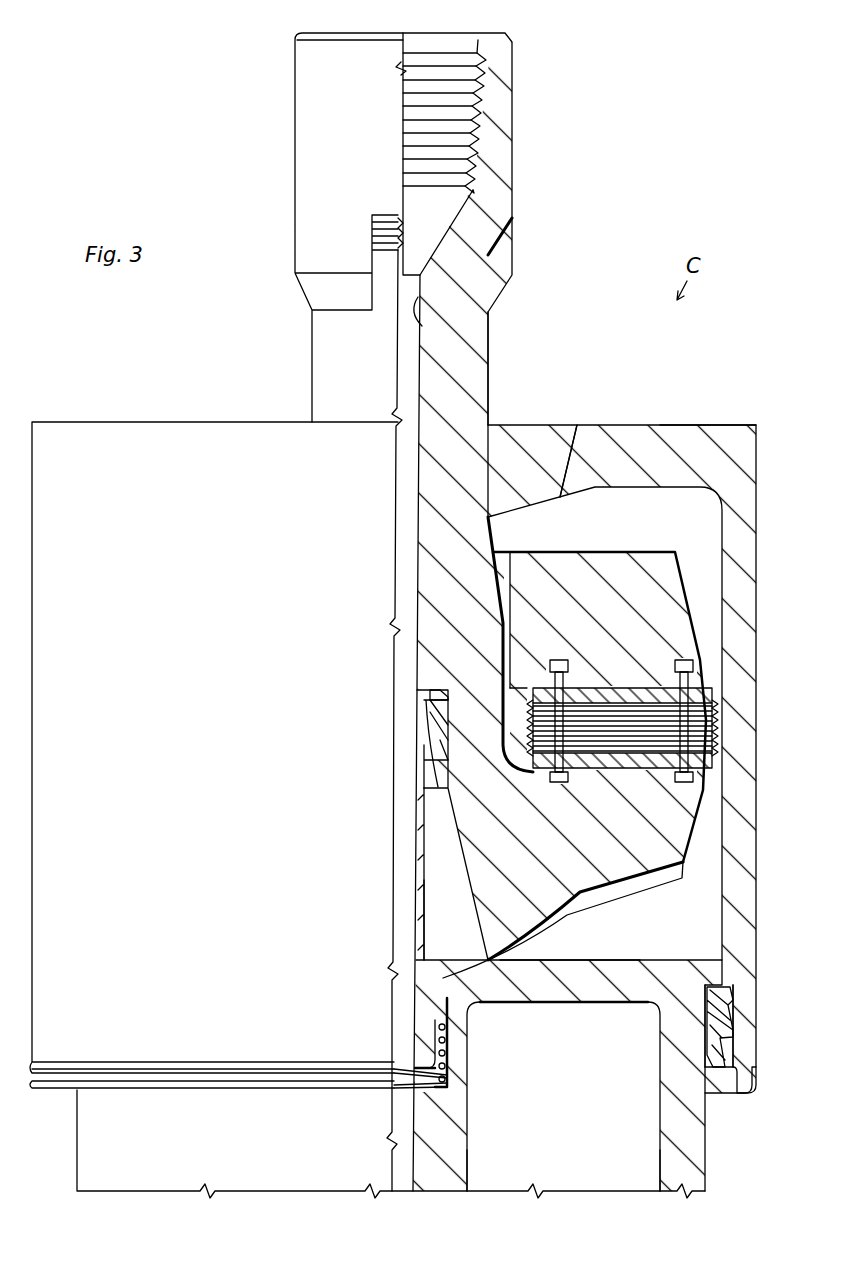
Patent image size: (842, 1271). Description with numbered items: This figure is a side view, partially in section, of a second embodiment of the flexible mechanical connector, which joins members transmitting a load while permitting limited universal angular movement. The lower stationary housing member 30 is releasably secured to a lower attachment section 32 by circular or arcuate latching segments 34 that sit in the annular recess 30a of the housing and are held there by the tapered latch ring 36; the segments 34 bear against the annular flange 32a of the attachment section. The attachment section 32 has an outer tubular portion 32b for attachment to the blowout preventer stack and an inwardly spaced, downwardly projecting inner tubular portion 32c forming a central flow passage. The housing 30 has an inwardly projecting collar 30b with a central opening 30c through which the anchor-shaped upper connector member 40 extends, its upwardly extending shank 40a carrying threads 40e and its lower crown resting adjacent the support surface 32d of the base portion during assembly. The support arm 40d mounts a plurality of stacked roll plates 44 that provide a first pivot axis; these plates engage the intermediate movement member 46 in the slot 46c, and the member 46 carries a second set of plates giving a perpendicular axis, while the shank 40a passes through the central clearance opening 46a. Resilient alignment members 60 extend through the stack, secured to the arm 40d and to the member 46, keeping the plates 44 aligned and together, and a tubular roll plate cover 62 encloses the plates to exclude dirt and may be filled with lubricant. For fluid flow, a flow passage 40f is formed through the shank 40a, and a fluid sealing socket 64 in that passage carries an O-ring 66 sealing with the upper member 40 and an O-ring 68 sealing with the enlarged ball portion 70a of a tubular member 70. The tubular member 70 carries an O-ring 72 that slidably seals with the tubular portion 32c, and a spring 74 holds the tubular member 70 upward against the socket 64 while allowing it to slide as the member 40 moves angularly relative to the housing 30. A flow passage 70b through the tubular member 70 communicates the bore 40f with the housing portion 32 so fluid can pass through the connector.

The lower stationary housing member 30 is at (740, 920).
The annular recess 30a is at (730, 1010).
The inwardly projecting collar 30b is at (680, 425).
The central opening 30c is at (556, 425).
The lower attachment section 32 is at (665, 1108).
The annular flange 32a is at (720, 1000).
The outer tubular portion 32b is at (690, 1172).
The inner downwardly projecting tubular portion 32c is at (450, 1160).
The support surface 32d is at (565, 960).
The latching segments 34 is at (737, 1008).
The tapered latch ring 36 is at (735, 1093).
The upper connector member 40 is at (492, 198).
The shank 40a is at (488, 352).
The support arm 40d is at (673, 808).
The threads 40e is at (483, 103).
The flow passage 40f is at (418, 297).
The stacked roll plates 44 is at (695, 718).
The intermediate movement member 46 is at (618, 558).
The central opening 46a is at (513, 563).
The slot 46c is at (610, 690).
The resilient alignment members 60 is at (690, 668).
The tubular roll plate cover 62 is at (715, 727).
The fluid sealing socket 64 is at (428, 715).
The O-ring 66 is at (445, 696).
The O-ring 68 is at (440, 720).
The tubular member 70 is at (417, 853).
The enlarged ball portion 70a is at (422, 740).
The flow passage 70b is at (415, 877).
The O-ring 72 is at (447, 998).
The spring 74 is at (435, 1037).